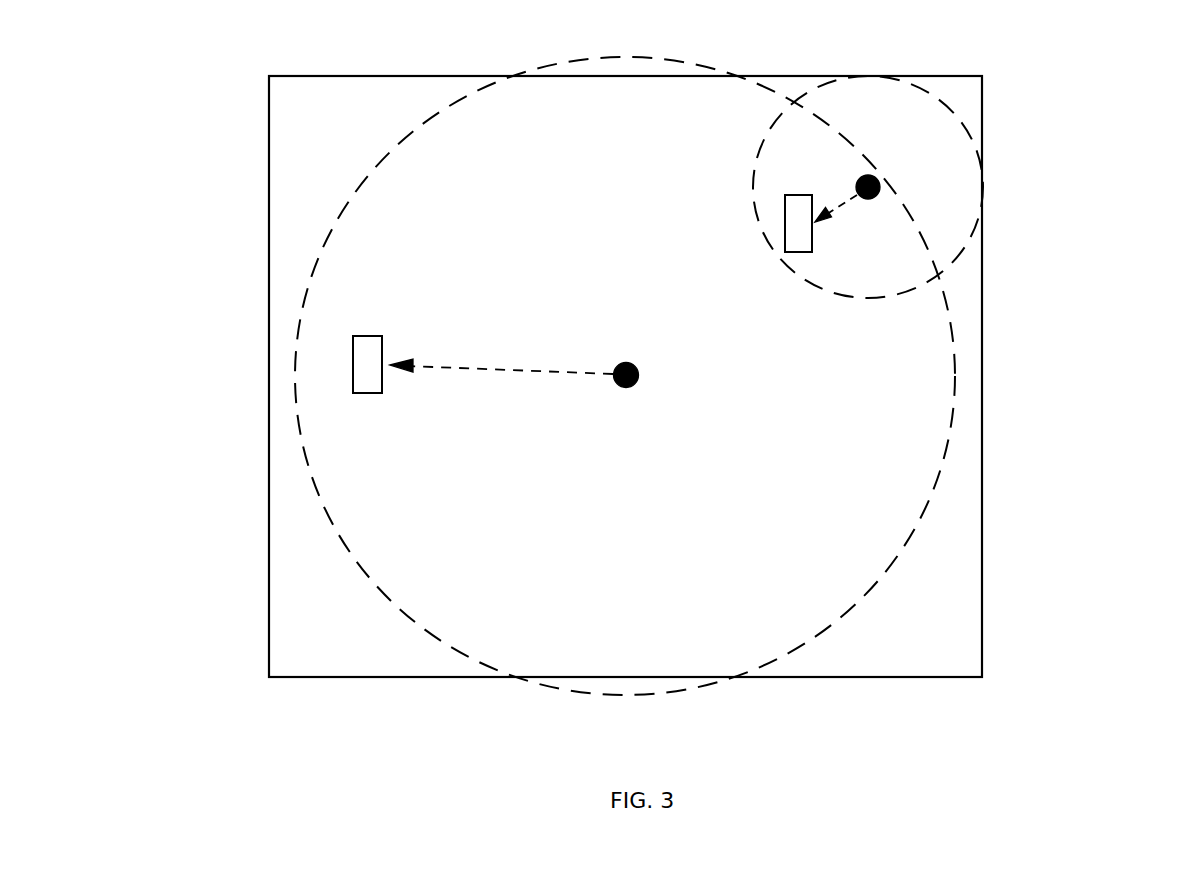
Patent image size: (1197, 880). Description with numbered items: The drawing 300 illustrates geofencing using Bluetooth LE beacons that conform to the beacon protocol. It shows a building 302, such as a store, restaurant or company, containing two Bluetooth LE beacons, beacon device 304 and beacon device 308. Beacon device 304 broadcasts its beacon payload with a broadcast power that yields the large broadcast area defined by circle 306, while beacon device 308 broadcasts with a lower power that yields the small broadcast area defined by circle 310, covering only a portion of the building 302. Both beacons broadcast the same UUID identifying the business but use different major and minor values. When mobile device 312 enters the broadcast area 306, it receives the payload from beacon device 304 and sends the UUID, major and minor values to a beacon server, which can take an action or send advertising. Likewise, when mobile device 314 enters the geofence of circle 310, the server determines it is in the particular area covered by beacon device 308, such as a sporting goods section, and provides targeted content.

The drawing 300 is at (1134, 118).
The building 302 is at (269, 175).
The beacon device 304 is at (637, 369).
The circle 306 is at (330, 520).
The beacon device 308 is at (868, 200).
The circle 310 is at (753, 178).
The mobile device 312 is at (382, 348).
The mobile device 314 is at (784, 251).